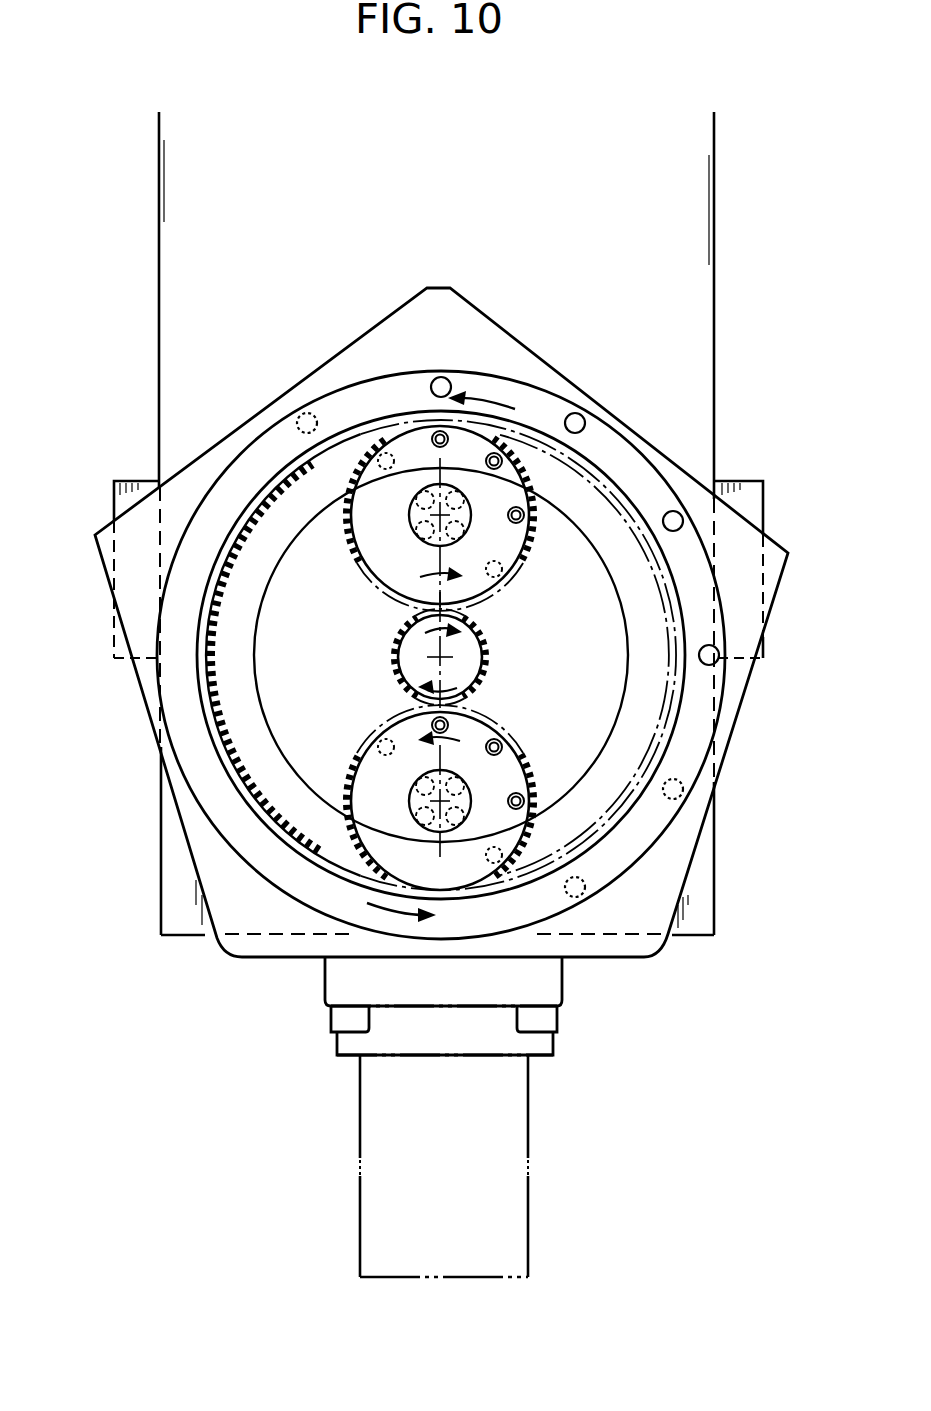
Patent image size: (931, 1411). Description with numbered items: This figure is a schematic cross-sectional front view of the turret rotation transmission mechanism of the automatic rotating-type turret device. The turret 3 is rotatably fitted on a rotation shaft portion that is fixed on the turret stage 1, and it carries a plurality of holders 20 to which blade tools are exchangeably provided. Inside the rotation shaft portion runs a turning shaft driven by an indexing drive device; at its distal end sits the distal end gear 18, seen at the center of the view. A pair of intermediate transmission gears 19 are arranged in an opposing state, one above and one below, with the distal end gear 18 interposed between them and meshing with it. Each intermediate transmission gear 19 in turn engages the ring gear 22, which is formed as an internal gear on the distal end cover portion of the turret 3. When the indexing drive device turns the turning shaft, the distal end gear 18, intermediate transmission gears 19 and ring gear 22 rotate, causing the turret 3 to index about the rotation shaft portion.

The turret stage 1 is at (140, 316).
The turret 3 is at (593, 365).
The distal end gear 18 is at (482, 660).
The intermediate transmission gears 19 is at (373, 545).
The holder 20 is at (530, 1135).
The ring gear 22 is at (217, 723).